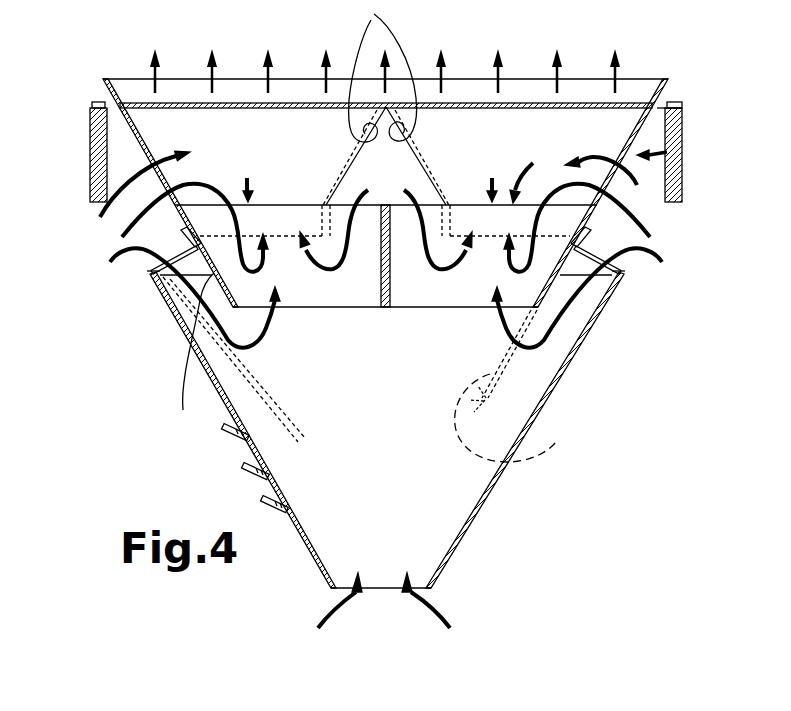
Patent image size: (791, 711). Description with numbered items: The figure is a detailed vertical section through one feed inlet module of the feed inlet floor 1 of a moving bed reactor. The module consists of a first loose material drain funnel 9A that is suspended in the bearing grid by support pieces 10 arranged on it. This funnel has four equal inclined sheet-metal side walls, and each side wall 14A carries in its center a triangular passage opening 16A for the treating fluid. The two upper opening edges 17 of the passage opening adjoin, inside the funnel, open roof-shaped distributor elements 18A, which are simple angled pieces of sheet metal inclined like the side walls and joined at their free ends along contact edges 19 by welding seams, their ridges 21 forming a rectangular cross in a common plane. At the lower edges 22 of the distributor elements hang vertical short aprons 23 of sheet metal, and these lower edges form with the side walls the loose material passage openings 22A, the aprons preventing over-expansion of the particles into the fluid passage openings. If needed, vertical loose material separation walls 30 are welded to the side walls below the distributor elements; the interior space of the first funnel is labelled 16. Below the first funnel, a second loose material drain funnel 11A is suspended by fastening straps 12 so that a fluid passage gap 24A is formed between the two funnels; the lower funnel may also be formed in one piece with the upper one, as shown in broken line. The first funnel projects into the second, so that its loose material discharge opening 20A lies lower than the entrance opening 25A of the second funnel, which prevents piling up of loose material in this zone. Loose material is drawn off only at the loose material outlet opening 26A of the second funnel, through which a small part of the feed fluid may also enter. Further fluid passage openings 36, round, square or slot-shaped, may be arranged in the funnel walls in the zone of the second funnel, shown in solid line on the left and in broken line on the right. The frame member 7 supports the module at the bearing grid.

The feed inlet floor 1 is at (749, 46).
The support frame member 7 is at (100, 163).
The first loose material drain funnel 9A is at (675, 143).
The support pieces 10 is at (100, 103).
The second loose material drain funnel 11A is at (541, 402).
The fastening straps 12 is at (587, 273).
The side wall 14A is at (183, 308).
The inner hopper chamber 16 is at (400, 173).
The passage opening 16A is at (118, 214).
The upper opening edges 17 is at (382, 71).
The distributor elements 18A is at (182, 125).
The contact edges 19 is at (425, 167).
The loose material discharge opening 20A is at (287, 313).
The ridges 21 is at (238, 108).
The lower edges 22 is at (283, 204).
The loose material passage openings 22A is at (247, 178).
The aprons 23 is at (471, 225).
The fluid passage gap 24A is at (175, 280).
The entrance opening 25A is at (573, 277).
The loose material outlet opening 26A is at (383, 590).
The loose material separation walls 30 is at (393, 277).
The openings 36 is at (243, 448).